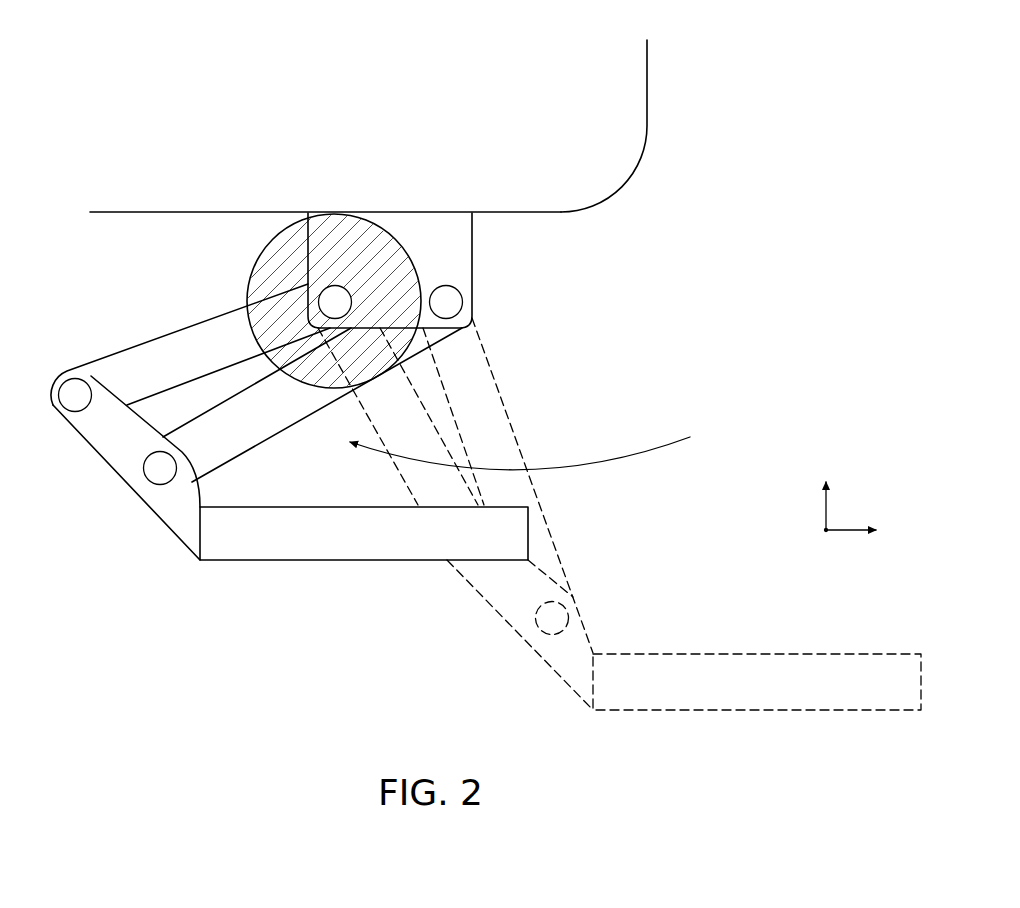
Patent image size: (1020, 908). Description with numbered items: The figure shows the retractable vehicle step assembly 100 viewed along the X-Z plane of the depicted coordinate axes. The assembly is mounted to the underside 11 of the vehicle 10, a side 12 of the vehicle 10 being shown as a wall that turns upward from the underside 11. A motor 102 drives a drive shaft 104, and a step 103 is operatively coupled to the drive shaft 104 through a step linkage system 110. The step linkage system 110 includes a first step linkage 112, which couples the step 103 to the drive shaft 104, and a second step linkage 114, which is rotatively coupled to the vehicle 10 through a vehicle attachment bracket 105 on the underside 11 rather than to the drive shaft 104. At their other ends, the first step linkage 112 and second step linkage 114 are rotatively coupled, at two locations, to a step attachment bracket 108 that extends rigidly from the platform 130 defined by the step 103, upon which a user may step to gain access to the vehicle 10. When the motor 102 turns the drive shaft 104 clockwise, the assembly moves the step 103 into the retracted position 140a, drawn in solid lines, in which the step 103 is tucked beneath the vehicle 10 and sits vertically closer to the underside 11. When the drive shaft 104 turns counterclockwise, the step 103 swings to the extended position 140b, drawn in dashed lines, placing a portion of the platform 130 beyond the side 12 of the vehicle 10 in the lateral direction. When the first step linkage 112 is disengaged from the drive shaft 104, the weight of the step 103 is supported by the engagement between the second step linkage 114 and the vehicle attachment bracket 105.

The retractable vehicle step assembly 100 is at (463, 371).
The vehicle 10 is at (377, 166).
The underside 11 is at (112, 213).
The side 12 is at (647, 95).
The vehicle attachment bracket 105 is at (602, 237).
The motor 102 is at (248, 290).
The drive shaft 104 is at (352, 303).
The step linkage system 110 is at (233, 457).
The first step linkage 112 is at (135, 342).
The second step linkage 114 is at (278, 430).
The step attachment bracket 108 is at (126, 509).
The step 103 is at (445, 557).
The platform 130 is at (360, 505).
The retracted position 140a is at (66, 534).
The extended position 140b is at (619, 514).